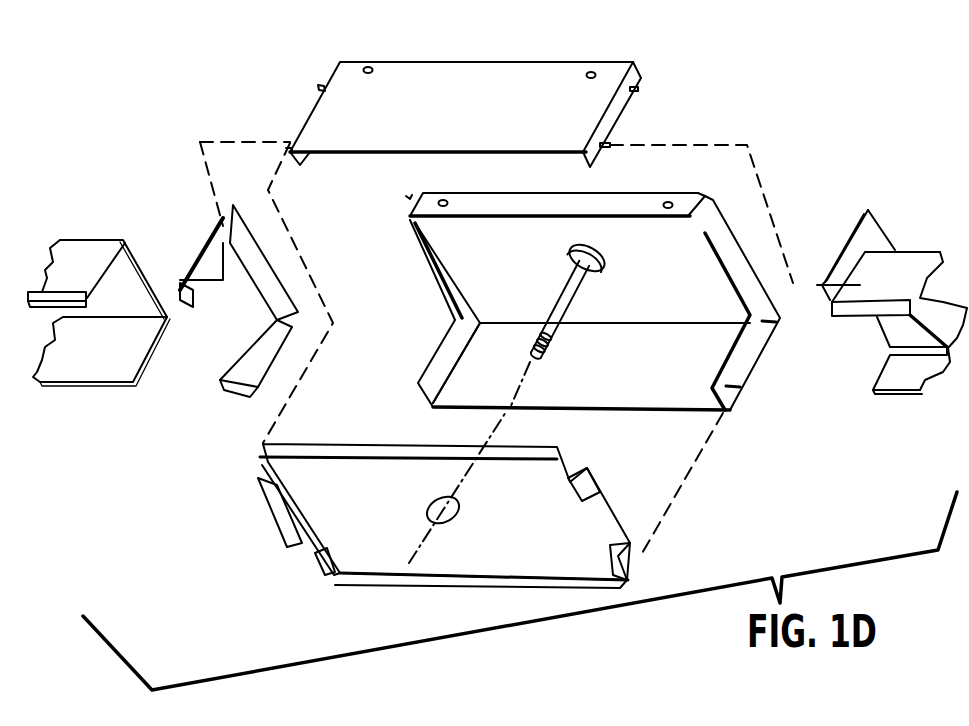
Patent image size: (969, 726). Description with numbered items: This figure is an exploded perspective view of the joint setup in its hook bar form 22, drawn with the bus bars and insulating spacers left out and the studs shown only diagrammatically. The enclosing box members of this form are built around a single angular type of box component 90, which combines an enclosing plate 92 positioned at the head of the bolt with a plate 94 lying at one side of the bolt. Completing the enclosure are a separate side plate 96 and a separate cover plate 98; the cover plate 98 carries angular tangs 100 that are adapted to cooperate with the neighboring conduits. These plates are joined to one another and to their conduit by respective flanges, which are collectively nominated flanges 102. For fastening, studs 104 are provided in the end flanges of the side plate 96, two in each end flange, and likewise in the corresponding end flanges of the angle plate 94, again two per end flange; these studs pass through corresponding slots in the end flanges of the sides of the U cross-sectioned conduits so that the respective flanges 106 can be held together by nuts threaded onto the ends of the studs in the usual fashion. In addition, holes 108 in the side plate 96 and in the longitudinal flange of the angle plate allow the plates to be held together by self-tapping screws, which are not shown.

The hook bar form 22 is at (244, 68).
The angular type of box component 90 is at (703, 212).
The enclosing plate 92 is at (730, 250).
The plate at one side of the bolt 94 is at (660, 404).
The side plate 96 is at (532, 63).
The cover plate 98 is at (337, 445).
The angular tangs 100 is at (612, 505).
The flanges 102 is at (620, 115).
The studs 104 is at (321, 86).
The flanges 106 is at (213, 234).
The holes 108 is at (372, 70).